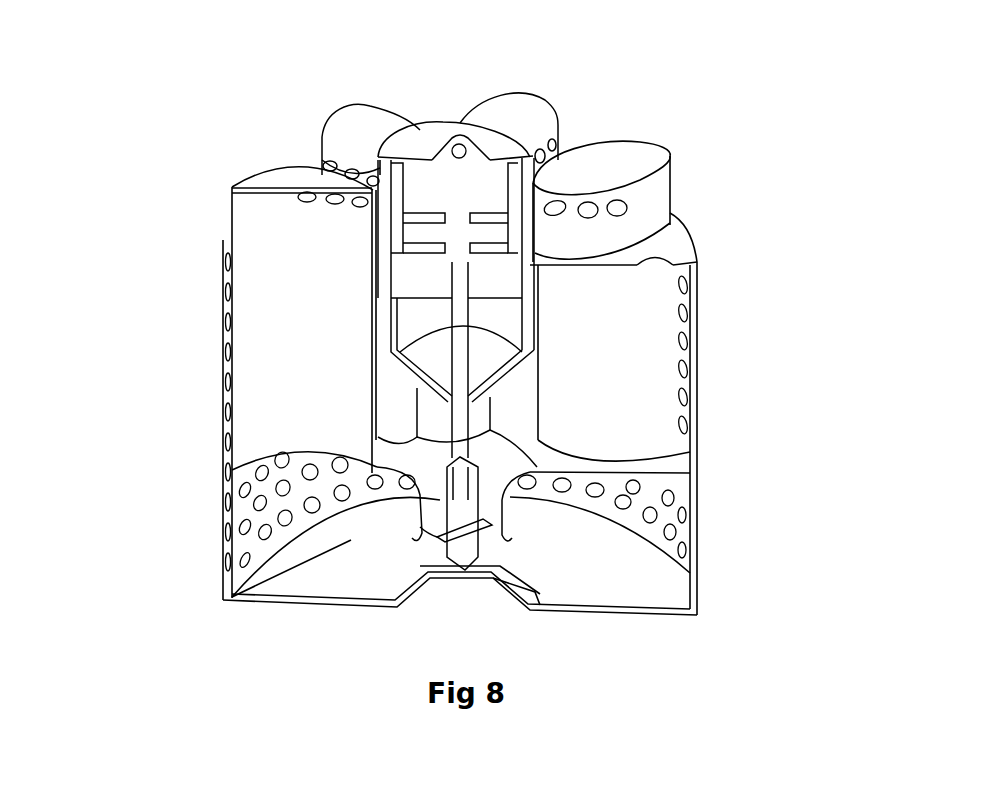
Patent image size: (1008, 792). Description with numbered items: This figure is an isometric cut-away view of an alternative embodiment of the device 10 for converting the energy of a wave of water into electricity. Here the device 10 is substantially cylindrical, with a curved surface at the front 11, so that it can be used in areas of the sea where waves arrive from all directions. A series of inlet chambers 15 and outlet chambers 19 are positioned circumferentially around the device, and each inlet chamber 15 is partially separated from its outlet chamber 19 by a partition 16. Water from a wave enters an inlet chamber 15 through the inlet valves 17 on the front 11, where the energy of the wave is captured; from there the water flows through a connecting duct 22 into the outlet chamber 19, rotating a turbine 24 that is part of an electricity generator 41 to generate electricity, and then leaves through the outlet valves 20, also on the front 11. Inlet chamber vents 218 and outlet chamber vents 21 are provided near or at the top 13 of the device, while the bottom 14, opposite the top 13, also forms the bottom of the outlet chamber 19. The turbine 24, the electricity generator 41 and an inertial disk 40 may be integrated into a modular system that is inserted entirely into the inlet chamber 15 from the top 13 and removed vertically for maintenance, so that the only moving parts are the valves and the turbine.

The device 10 is at (730, 130).
The front 11 is at (118, 408).
The top 13 is at (458, 72).
The bottom 14 is at (357, 650).
The inlet chamber 15 is at (693, 460).
The partition 16 is at (577, 473).
The inlet valves 17 is at (693, 375).
The outlet chamber 19 is at (302, 293).
The outlet valves 20 is at (693, 523).
The outlet chamber vents 21 is at (620, 208).
The connecting duct 22 is at (400, 476).
The turbine 24 is at (463, 517).
The inertial disk 40 is at (420, 232).
The electricity generator 41 is at (465, 168).
The inlet chamber vents 218 is at (657, 260).